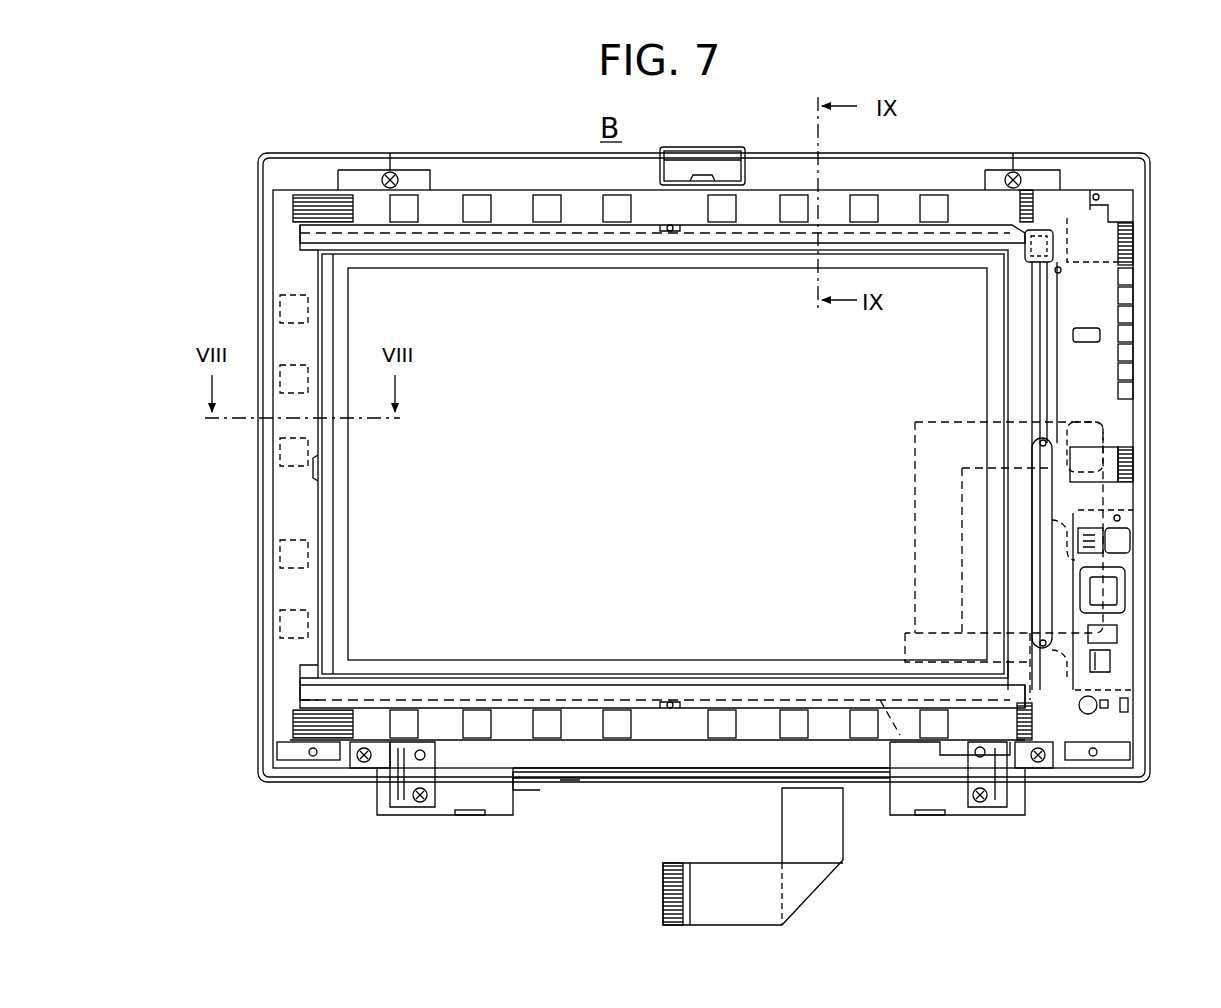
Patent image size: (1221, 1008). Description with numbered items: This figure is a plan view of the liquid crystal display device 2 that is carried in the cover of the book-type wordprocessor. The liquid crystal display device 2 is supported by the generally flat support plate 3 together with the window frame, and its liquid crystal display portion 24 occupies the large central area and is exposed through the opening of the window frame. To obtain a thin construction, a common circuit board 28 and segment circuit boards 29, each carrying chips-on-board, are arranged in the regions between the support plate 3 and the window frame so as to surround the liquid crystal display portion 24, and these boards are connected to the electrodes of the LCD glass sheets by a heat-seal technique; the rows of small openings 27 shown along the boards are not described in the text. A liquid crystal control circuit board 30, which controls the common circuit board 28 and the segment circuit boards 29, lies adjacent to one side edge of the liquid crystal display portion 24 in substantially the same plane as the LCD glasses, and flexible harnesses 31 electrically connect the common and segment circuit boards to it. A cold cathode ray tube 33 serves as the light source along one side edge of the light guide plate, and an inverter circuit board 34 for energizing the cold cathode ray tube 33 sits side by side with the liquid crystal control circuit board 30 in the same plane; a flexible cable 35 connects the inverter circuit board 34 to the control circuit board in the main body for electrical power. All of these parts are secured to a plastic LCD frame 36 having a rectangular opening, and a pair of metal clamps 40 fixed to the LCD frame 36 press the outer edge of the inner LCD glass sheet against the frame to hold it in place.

The liquid crystal display device 2 is at (604, 464).
The support plate 3 is at (1152, 292).
The liquid crystal display portion 24 is at (365, 522).
The engaging holes 27 is at (418, 195).
The common circuit board 28 is at (293, 268).
The segment circuit boards 29 is at (515, 210).
The liquid crystal control circuit board 30 is at (1105, 355).
The flexible harnesses 31 is at (300, 215).
The cold cathode ray tube 33 is at (1040, 695).
The inverter circuit board 34 is at (1125, 602).
The flexible cable 35 is at (845, 835).
The LCD frame 36 is at (900, 190).
The clamps 40 is at (296, 683).